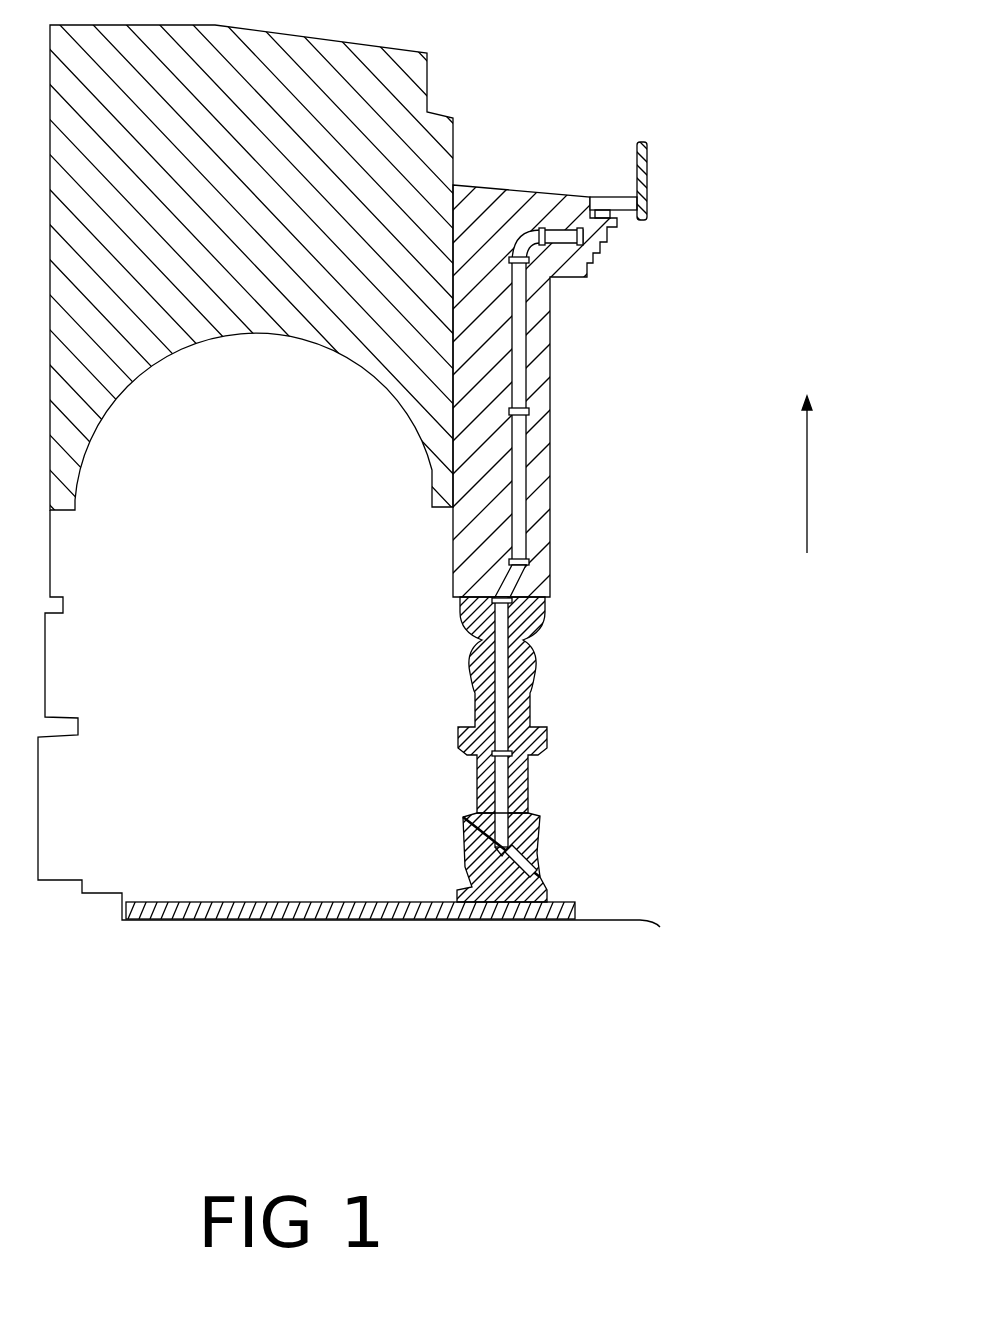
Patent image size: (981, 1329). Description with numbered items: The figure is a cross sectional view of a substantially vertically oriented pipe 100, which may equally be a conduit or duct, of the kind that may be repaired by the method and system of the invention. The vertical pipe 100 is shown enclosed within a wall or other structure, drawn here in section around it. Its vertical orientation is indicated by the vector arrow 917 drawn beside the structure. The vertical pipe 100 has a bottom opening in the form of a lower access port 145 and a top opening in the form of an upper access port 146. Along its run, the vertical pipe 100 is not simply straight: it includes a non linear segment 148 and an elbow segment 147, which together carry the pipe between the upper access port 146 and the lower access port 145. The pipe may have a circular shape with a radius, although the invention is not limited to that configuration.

The vertical pipe 100 is at (527, 667).
The lower access port 145 is at (540, 877).
The upper access port 146 is at (597, 212).
The elbow segment 147 is at (537, 246).
The non linear segment 148 is at (522, 587).
The vector arrow 917 is at (826, 500).